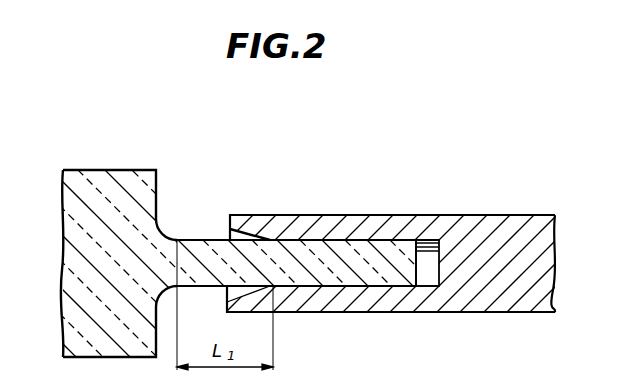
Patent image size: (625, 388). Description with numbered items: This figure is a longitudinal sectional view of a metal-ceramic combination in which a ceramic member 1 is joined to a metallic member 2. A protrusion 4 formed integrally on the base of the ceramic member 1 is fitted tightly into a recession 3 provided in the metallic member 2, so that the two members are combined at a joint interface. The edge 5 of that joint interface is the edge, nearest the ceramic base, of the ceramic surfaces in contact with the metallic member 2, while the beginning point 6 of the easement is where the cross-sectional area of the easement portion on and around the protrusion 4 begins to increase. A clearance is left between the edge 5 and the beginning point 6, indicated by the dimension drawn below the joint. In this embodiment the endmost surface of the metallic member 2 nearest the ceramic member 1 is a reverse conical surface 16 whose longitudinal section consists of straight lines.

The ceramic member 1 is at (130, 181).
The metallic member 2 is at (509, 303).
The recession 3 is at (426, 248).
The protrusion 4 is at (362, 247).
The edge of joint interface 5 is at (283, 228).
The beginning point of the easement 6 is at (178, 238).
The reverse conical surface 16 is at (230, 231).